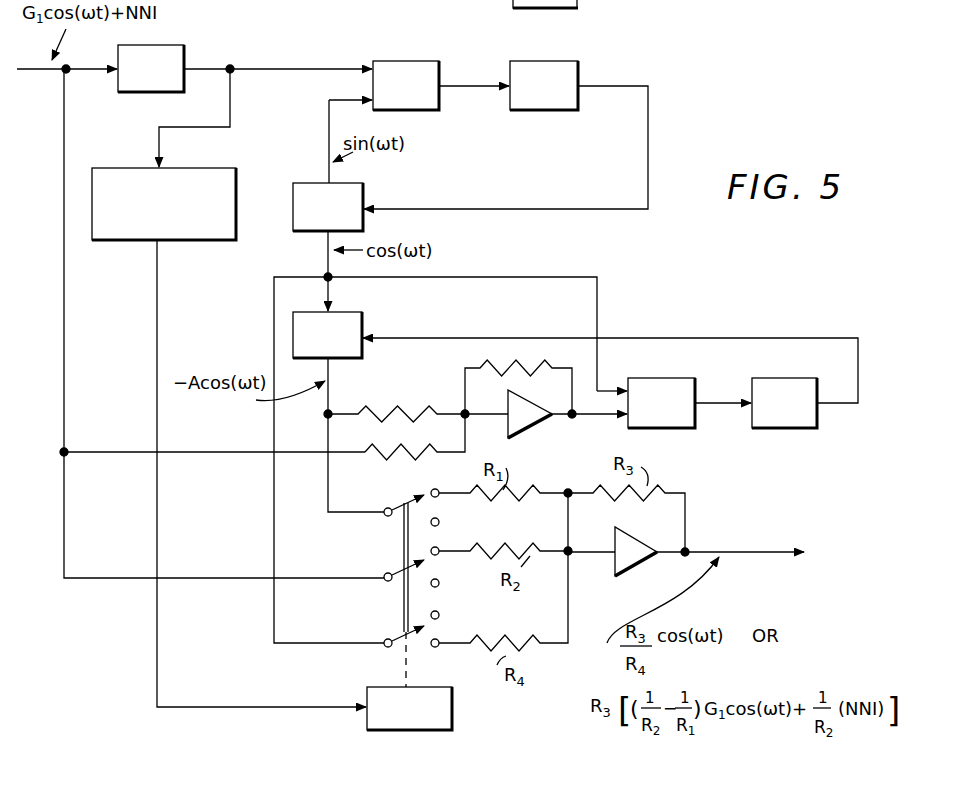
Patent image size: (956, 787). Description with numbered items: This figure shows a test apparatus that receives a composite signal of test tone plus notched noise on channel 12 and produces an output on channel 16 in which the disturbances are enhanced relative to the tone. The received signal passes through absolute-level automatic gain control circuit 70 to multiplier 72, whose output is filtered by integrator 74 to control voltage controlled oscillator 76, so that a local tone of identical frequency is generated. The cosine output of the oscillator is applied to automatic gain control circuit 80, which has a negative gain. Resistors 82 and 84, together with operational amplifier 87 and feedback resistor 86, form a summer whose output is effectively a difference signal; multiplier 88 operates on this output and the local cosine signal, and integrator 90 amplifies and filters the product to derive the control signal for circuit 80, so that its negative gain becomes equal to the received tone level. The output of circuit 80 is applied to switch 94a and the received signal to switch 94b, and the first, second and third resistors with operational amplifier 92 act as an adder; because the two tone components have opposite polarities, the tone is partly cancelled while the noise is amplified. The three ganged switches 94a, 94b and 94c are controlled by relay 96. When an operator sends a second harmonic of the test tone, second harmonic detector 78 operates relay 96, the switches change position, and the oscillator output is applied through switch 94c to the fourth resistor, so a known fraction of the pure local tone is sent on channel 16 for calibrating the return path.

The channel 12 is at (34, 71).
The channel 16 is at (758, 530).
The absolute-level automatic gain control circuit 70 is at (178, 45).
The multiplier 72 is at (427, 37).
The integrator 74 is at (562, 38).
The voltage controlled oscillator 76 is at (311, 182).
The second harmonic detector 78 is at (126, 168).
The automatic gain control circuit 80 is at (355, 311).
The resistor 82 is at (418, 394).
The resistor 84 is at (380, 440).
The feedback resistor 86 is at (498, 366).
The operational amplifier 87 is at (549, 421).
The multiplier 88 is at (680, 360).
The integrator 90 is at (797, 360).
The operational amplifier 92 is at (641, 563).
The switch 94a is at (403, 503).
The switch 94b is at (402, 566).
The switch 94c is at (402, 632).
The relay 96 is at (455, 708).